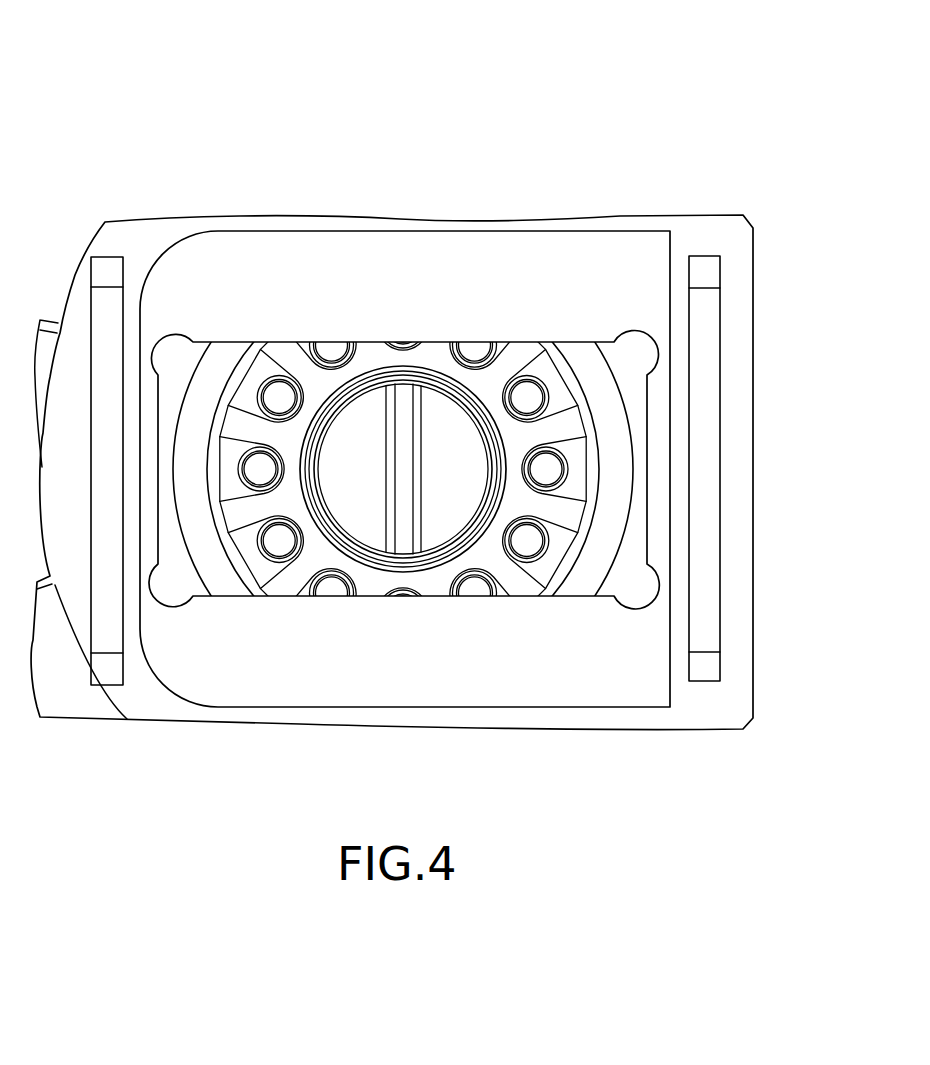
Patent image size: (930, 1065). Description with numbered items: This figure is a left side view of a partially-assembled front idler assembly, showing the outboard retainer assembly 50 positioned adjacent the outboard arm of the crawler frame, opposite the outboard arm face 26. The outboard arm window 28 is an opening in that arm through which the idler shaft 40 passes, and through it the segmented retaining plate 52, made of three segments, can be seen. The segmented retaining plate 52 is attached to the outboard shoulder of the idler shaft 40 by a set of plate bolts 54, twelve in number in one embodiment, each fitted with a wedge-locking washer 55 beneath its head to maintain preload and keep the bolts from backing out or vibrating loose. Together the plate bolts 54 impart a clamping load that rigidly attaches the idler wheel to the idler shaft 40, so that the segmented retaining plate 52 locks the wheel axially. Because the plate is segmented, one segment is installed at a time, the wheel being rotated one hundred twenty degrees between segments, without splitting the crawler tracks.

The outboard retainer assembly 50 is at (172, 123).
The outboard arm face 26 is at (597, 270).
The outboard arm window 28 is at (170, 588).
The segmented retaining plate 52 is at (403, 429).
The idler shaft 40 is at (437, 432).
The plate bolts 54 is at (403, 469).
The wedge-locking washers 55 is at (403, 469).